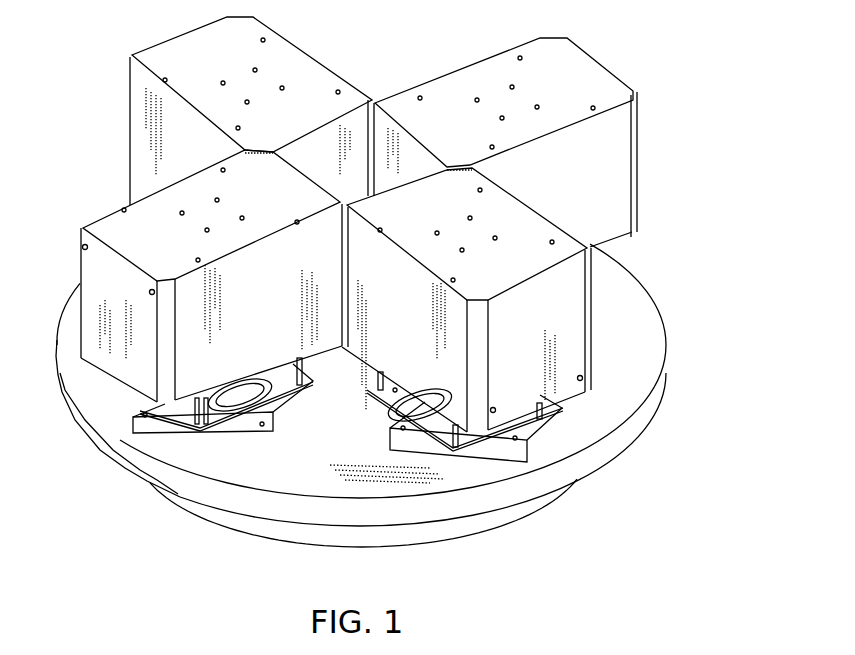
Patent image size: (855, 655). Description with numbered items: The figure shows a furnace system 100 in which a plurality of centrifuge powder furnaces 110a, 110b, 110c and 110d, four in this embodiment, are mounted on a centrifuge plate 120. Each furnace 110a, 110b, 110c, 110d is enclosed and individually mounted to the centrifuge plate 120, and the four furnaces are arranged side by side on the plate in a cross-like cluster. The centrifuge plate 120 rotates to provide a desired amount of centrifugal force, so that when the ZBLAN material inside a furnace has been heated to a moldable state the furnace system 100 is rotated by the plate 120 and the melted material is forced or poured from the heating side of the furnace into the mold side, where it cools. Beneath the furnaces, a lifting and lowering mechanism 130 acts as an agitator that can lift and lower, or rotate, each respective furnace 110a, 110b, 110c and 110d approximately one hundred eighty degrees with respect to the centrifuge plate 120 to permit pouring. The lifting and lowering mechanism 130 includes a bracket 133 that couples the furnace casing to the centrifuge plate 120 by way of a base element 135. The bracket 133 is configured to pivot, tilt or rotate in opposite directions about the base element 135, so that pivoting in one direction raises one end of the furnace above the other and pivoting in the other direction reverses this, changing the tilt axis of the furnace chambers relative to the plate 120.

The furnace system 100 is at (666, 57).
The centrifuge powder furnace 110a is at (487, 77).
The centrifuge powder furnace 110b is at (503, 215).
The centrifuge powder furnace 110c is at (113, 225).
The centrifuge powder furnace 110d is at (195, 52).
The centrifuge plate 120 is at (637, 320).
The lifting and lowering mechanism 130 is at (210, 427).
The bracket 133 is at (240, 412).
The base element 135 is at (272, 430).